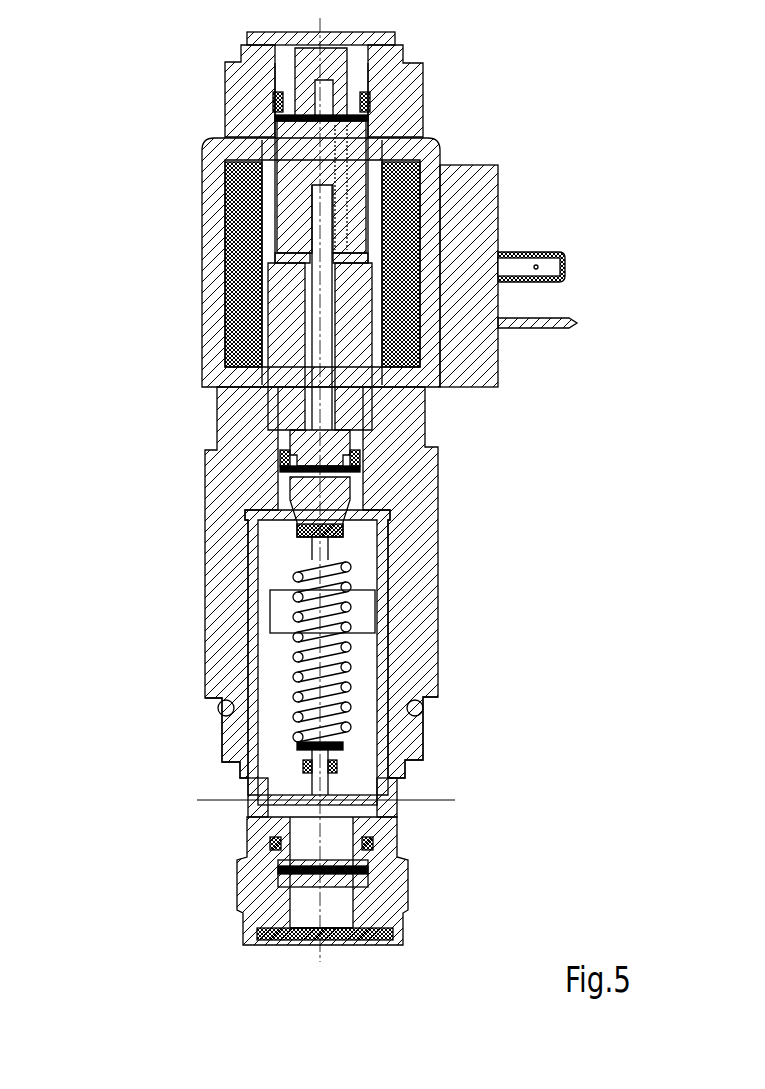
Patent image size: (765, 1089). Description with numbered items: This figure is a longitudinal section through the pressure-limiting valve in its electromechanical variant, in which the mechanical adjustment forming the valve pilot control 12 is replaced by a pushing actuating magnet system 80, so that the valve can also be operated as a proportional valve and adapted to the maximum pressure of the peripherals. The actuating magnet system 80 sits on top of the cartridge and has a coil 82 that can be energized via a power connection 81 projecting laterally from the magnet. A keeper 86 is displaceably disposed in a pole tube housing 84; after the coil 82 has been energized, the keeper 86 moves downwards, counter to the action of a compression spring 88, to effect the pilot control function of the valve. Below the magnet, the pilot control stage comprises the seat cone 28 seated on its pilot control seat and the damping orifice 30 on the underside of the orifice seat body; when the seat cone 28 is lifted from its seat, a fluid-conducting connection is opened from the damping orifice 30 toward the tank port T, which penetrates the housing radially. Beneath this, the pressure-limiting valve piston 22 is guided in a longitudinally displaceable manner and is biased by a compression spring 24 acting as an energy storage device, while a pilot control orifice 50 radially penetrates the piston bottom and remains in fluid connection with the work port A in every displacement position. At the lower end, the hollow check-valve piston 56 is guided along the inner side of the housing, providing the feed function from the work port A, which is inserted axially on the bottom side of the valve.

The valve pilot control 12 is at (343, 491).
The pressure-limiting valve piston 22 is at (397, 680).
The compression spring 24 is at (400, 612).
The seat cone 28 is at (437, 497).
The damping orifice 30 is at (437, 540).
The pilot control orifice 50 is at (423, 740).
The check-valve piston 56 is at (397, 823).
The actuating magnet system 80 is at (486, 153).
The power connection 81 is at (555, 268).
The coil 82 is at (397, 224).
The pole tube housing 84 is at (400, 58).
The keeper 86 is at (300, 155).
The compression spring 88 is at (432, 448).
The tank port T is at (397, 792).
The work port A is at (372, 942).